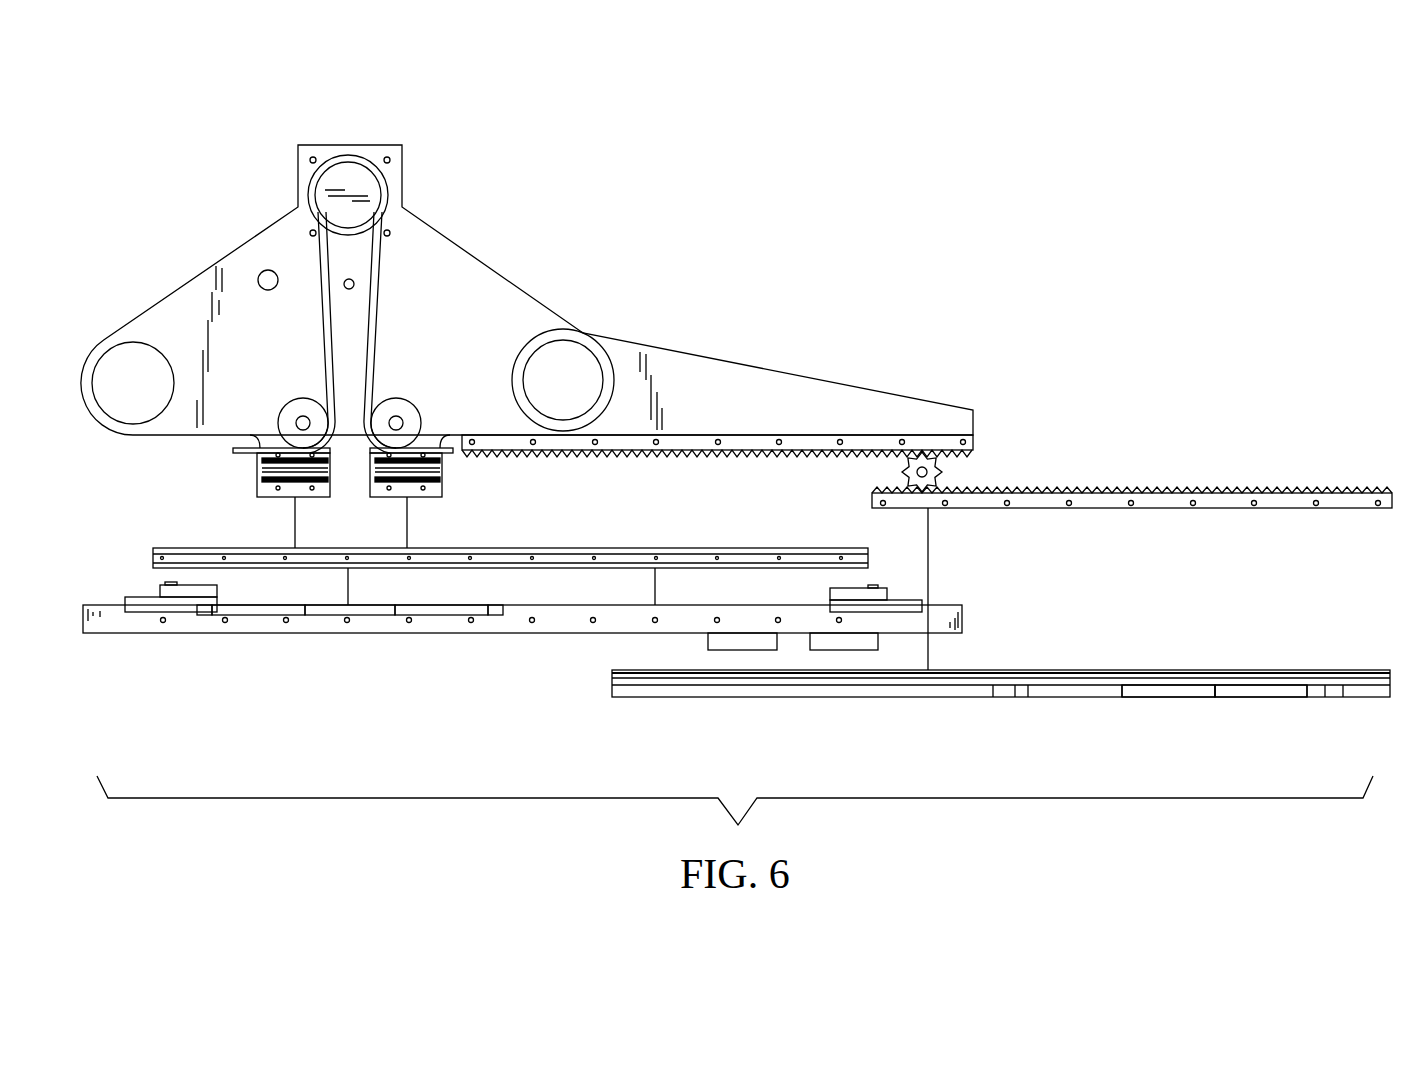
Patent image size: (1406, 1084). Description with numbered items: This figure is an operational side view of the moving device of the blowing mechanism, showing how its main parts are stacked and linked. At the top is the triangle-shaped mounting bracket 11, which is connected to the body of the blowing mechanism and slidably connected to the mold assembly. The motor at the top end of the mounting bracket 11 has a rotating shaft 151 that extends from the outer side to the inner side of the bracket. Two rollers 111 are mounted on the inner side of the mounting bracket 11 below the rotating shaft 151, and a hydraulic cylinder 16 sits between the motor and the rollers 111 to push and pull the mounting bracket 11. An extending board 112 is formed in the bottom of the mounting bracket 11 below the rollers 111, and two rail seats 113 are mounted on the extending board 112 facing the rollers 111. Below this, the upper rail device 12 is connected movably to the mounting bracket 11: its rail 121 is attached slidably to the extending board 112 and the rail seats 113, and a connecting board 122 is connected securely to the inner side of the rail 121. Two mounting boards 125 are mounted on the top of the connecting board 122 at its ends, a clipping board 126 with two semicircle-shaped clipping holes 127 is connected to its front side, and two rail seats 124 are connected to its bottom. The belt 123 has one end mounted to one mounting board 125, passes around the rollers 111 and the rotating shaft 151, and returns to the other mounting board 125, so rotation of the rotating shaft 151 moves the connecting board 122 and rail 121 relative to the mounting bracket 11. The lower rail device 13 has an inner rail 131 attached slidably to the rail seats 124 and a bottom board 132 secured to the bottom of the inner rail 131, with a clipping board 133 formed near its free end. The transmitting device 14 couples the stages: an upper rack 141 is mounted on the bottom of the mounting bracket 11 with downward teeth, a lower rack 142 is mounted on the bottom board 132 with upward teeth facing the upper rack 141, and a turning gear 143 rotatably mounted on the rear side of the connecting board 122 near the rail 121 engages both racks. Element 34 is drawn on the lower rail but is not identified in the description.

The mounting bracket 11 is at (465, 270).
The upper rail device 12 is at (522, 619).
The lower rail device 13 is at (1001, 651).
The transmitting device 14 is at (1132, 491).
The hydraulic cylinder 16 is at (264, 283).
The rail segment 34 is at (1288, 690).
The rollers 111 is at (408, 412).
The extending board 112 is at (337, 482).
The rail seats 113 is at (428, 470).
The rail 121 is at (565, 530).
The connecting board 122 is at (553, 620).
The belt 123 is at (375, 318).
The rail seats 124 is at (740, 640).
The mounting boards 125 is at (178, 593).
The clipping board 126 is at (373, 610).
The clipping holes 127 is at (447, 610).
The inner rail 131 is at (1262, 677).
The bottom board 132 is at (932, 688).
The clipping board 133 is at (1188, 690).
The upper rack 141 is at (868, 445).
The lower rack 142 is at (970, 500).
The turning gear 143 is at (934, 472).
The rotating shaft 151 is at (365, 192).